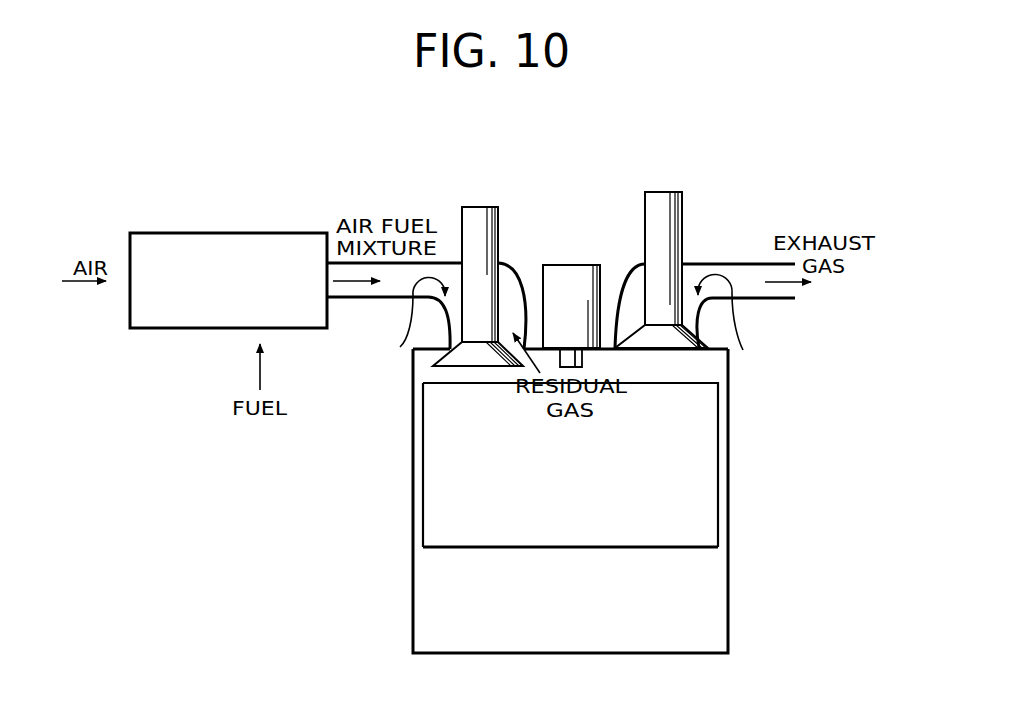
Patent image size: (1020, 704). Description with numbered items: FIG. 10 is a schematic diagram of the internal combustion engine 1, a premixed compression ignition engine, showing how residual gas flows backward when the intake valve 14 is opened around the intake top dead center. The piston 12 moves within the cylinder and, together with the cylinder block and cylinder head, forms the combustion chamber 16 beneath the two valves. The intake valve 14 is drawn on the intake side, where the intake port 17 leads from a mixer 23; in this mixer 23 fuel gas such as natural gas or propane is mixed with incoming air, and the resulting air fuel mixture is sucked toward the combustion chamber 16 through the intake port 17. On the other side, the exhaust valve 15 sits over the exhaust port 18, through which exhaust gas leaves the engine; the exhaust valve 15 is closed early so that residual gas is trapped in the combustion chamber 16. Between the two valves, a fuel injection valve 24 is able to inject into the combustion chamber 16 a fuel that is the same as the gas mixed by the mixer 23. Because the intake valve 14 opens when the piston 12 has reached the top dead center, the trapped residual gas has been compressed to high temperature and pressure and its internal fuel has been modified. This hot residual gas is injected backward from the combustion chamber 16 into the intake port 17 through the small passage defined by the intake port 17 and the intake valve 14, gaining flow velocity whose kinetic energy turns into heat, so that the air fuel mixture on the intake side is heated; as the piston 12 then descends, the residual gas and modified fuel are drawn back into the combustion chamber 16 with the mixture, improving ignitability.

The internal combustion engine 1 is at (609, 148).
The piston 12 is at (688, 467).
The intake valve 14 is at (478, 207).
The exhaust valve 15 is at (660, 193).
The combustion chamber 16 is at (683, 366).
The intake port 17 is at (426, 311).
The exhaust port 18 is at (713, 312).
The mixer 23 is at (233, 237).
The fuel injection valve 24 is at (570, 270).